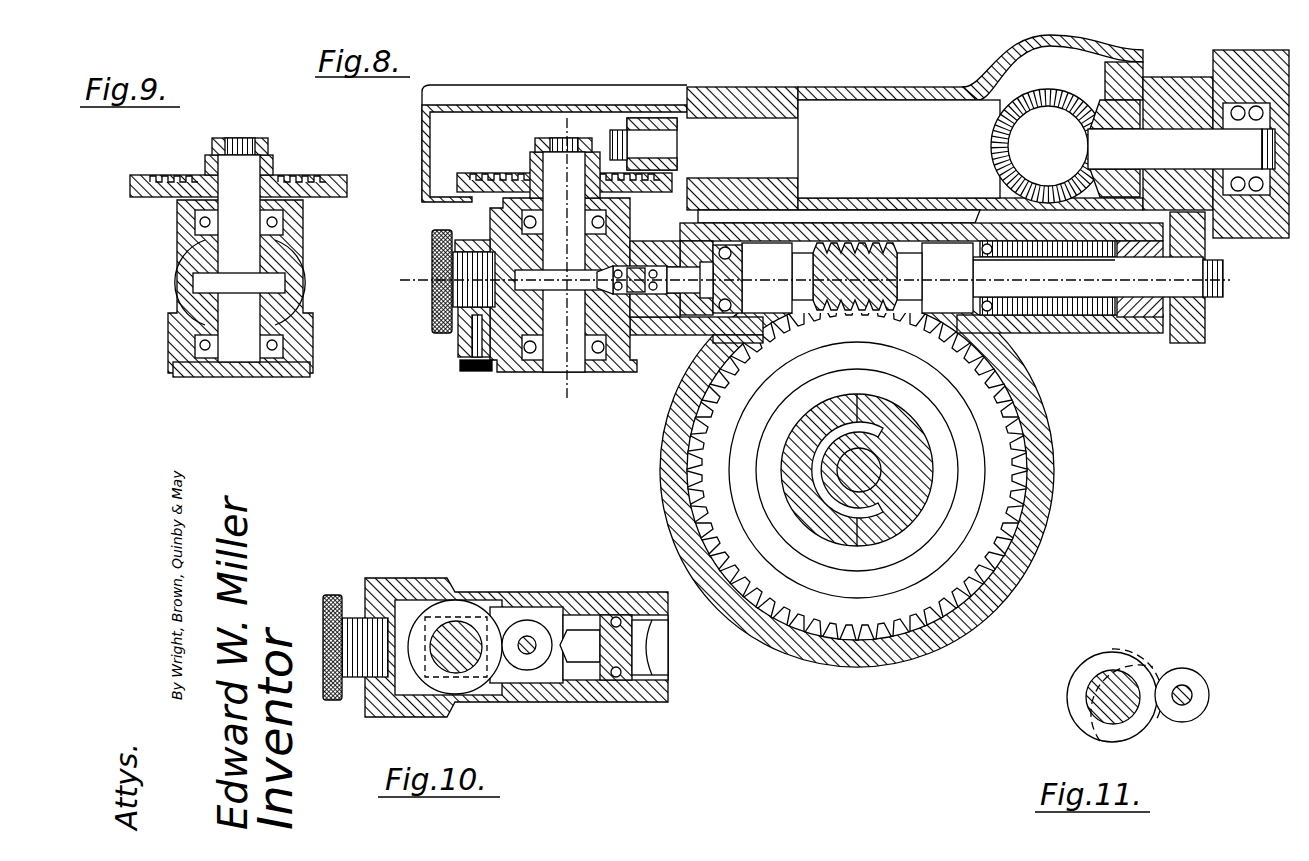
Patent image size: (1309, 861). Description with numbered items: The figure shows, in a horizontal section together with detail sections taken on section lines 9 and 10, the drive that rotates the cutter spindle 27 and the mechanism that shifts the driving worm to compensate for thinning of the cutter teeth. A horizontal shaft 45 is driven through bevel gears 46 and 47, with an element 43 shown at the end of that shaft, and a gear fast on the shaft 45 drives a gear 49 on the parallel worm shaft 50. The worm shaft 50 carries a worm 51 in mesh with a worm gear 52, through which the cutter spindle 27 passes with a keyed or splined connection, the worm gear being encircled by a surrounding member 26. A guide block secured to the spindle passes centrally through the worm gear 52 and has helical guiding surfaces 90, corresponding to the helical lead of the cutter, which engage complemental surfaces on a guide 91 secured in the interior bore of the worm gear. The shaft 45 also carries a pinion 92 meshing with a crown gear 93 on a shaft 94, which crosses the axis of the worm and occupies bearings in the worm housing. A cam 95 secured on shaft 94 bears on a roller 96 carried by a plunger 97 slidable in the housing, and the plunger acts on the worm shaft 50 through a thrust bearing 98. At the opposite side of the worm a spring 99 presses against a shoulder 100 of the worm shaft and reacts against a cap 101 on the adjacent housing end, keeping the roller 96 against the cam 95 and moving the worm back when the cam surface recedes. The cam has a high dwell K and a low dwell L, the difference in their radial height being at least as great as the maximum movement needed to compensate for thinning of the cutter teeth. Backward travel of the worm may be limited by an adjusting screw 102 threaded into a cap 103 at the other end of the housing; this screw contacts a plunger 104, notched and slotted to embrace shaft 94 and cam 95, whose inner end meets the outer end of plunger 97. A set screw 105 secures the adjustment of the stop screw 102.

In FIG. 8, the ring gear 26 is at (1052, 480).
In FIG. 8, the cutter spindle 27 is at (880, 465).
In FIG. 8, the bearing block 43 is at (1170, 95).
In FIG. 8, the horizontal shaft 45 is at (870, 130).
In FIG. 8, the bevel gear 46 is at (1022, 100).
In FIG. 8, the bevel gear 47 is at (1093, 120).
In FIG. 8, the gear 49 is at (1188, 335).
In FIG. 8, the parallel shaft 50 is at (1098, 277).
In FIG. 10, the parallel shaft 50 is at (645, 632).
In FIG. 8, the worm 51 is at (905, 262).
In FIG. 8, the worm gear 52 is at (915, 337).
In FIG. 8, the helical guiding surfaces 90 is at (868, 405).
In FIG. 8, the guide 91 is at (828, 520).
In FIG. 8, the pinion 92 is at (642, 120).
In FIG. 8, the crown gear 93 is at (465, 173).
In FIG. 9, the crown gear 93 is at (330, 178).
In FIG. 8, the shaft 94 is at (545, 180).
In FIG. 9, the shaft 94 is at (235, 260).
In FIG. 10, the shaft 94 is at (450, 635).
In FIG. 8, the cam 95 is at (595, 292).
In FIG. 9, the cam 95 is at (205, 283).
In FIG. 10, the cam 95 is at (470, 615).
In FIG. 11, the cam 95 is at (1080, 695).
In FIG. 8, the roller 96 is at (602, 272).
In FIG. 10, the roller 96 is at (527, 630).
In FIG. 11, the roller 96 is at (1195, 682).
In FIG. 8, the plunger 97 is at (695, 312).
In FIG. 10, the plunger 97 is at (583, 628).
In FIG. 8, the thrust bearing 98 is at (735, 258).
In FIG. 10, the thrust bearing 98 is at (616, 615).
In FIG. 8, the spring 99 is at (1052, 320).
In FIG. 8, the shoulder 100 is at (975, 293).
In FIG. 8, the cap 101 is at (1145, 322).
In FIG. 8, the adjusting screw 102 is at (432, 300).
In FIG. 10, the adjusting screw 102 is at (360, 680).
In FIG. 8, the cap 103 is at (468, 312).
In FIG. 10, the cap 103 is at (360, 615).
In FIG. 8, the plunger 104 is at (512, 232).
In FIG. 9, the plunger 104 is at (185, 310).
In FIG. 10, the plunger 104 is at (400, 600).
In FIG. 8, the set screw 105 is at (460, 366).
In FIG. 8, the section line 9— 9 is at (592, 123).
In FIG. 8, the section line 10— 10 is at (385, 262).
In FIG. 11, the direction K is at (1078, 668).
In FIG. 11, the low dwell L is at (1153, 675).